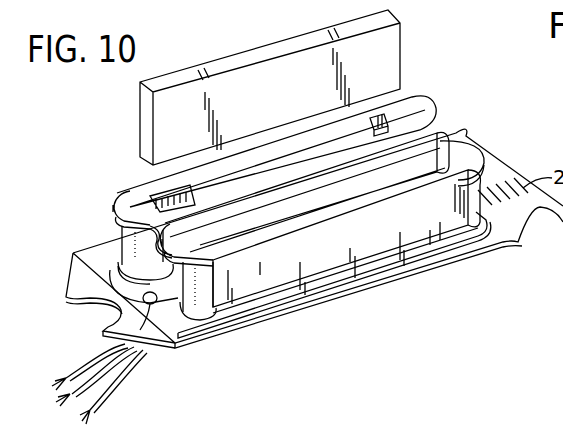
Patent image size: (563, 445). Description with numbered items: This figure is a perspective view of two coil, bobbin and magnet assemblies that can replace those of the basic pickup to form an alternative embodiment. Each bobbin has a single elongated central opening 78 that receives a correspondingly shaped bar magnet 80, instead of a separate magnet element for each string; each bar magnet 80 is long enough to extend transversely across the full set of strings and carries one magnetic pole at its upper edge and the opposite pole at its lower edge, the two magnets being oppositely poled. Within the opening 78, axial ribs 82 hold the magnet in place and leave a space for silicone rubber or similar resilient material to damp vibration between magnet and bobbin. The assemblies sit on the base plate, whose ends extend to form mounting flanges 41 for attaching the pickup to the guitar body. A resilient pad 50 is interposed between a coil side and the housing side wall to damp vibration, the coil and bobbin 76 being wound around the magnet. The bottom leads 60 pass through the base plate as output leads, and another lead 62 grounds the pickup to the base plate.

The mounting flange 41 is at (78, 289).
The pad 50 is at (380, 232).
The bottom leads 60 is at (110, 345).
The lead 62 is at (113, 380).
The bobbin coil 76 is at (122, 203).
The elongated central opening 78 is at (190, 193).
The bar magnet 80 is at (390, 53).
The axial ribs 82 is at (377, 125).